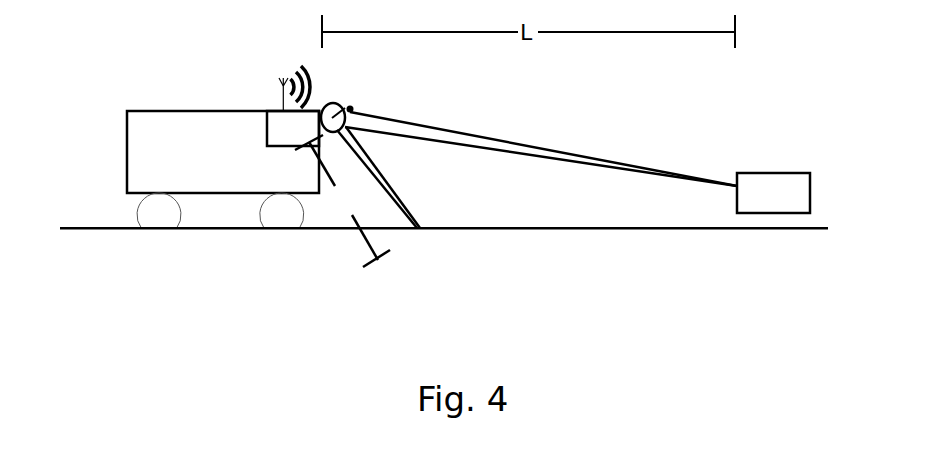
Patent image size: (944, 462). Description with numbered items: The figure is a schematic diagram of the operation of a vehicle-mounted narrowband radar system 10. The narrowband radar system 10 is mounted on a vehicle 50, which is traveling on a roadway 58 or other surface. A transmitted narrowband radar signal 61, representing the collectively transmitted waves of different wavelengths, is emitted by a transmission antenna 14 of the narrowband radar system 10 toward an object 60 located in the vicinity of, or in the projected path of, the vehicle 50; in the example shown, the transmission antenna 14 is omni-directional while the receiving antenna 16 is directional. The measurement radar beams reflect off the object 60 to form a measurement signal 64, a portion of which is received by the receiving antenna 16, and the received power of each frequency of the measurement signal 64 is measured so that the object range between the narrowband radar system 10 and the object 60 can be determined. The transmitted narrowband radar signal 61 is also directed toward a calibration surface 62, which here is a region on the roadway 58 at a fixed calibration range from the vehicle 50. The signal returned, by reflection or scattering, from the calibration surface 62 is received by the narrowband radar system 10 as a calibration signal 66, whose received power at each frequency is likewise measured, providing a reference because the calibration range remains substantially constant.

The narrowband radar system 10 is at (266, 134).
The transmission antenna 14 is at (282, 97).
The receiving antenna 16 is at (340, 105).
The vehicle 50 is at (150, 110).
The roadway 58 is at (195, 232).
The object 60 is at (777, 173).
The transmitted narrowband radar signal 61 is at (303, 66).
The calibration surface 62 is at (415, 232).
The measurement signal 64 is at (602, 160).
The calibration signal 66 is at (400, 198).